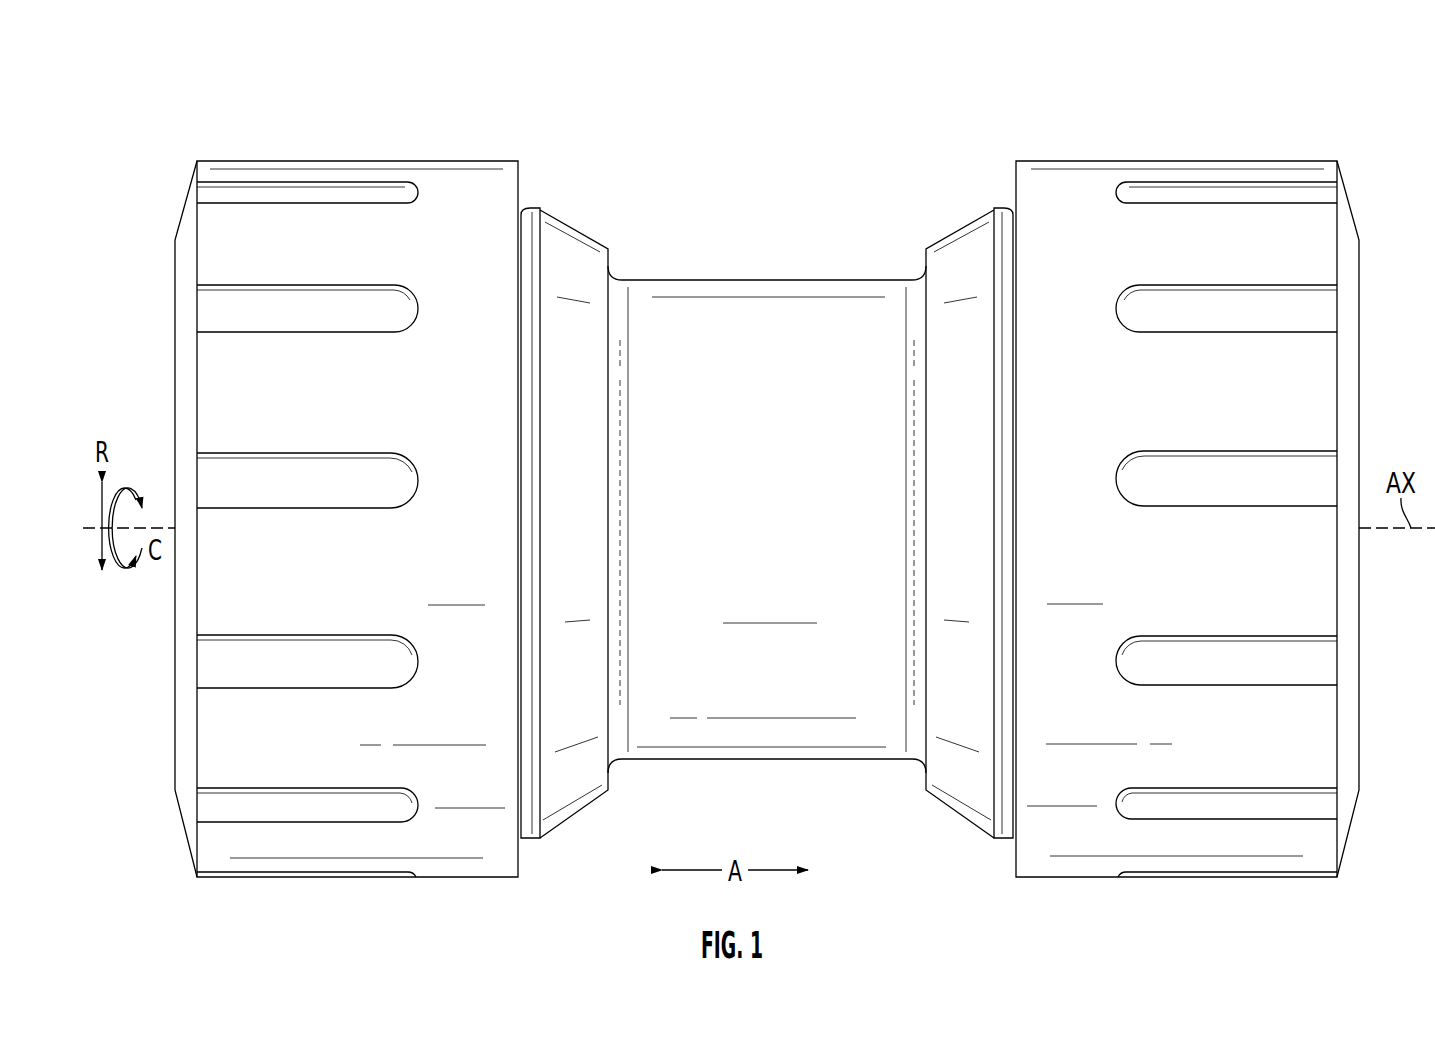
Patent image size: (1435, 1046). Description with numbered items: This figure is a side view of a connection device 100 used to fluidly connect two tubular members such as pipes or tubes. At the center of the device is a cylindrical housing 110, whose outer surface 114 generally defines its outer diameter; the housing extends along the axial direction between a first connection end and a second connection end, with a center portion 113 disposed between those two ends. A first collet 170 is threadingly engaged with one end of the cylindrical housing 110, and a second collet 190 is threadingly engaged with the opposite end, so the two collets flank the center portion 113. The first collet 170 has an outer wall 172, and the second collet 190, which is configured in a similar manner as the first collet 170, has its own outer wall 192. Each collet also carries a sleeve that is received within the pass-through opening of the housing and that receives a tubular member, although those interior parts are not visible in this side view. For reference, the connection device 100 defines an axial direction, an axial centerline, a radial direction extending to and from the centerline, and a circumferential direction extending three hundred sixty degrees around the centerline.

The connection device 100 is at (183, 137).
The first collet 170 is at (449, 190).
The outer wall 172 is at (262, 215).
The cylindrical housing 110 is at (582, 234).
The center portion 113 is at (802, 343).
The outer surface 114 is at (953, 228).
The second collet 190 is at (1053, 267).
The outer wall 192 is at (1240, 237).